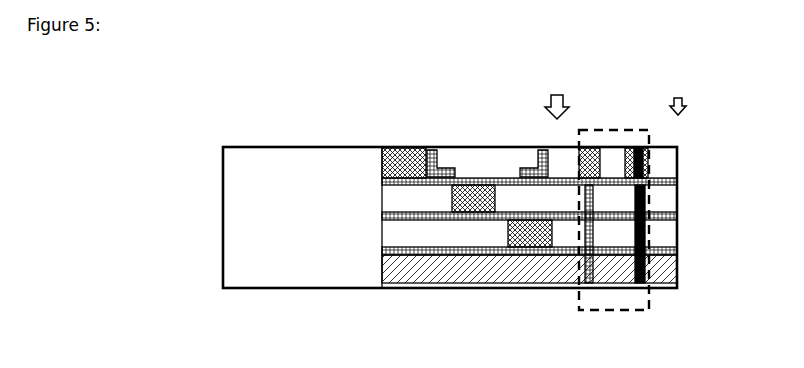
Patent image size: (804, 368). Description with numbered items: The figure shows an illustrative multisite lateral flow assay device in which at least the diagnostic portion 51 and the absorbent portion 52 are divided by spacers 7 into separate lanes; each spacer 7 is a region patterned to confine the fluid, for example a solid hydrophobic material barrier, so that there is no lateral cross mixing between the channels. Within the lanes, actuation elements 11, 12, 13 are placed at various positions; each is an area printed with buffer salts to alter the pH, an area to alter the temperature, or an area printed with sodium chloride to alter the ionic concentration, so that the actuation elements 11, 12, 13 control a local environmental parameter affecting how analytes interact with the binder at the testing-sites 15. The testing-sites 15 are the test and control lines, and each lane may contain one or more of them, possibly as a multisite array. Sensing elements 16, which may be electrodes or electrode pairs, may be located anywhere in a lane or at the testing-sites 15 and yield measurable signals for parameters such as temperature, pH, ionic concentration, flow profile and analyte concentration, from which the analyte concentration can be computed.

The spacer 7 is at (397, 222).
The actuation element 11 is at (403, 162).
The actuation element 12 is at (472, 197).
The actuation element 13 is at (530, 233).
The testing-sites 15 is at (614, 230).
The sensing elements 16 is at (623, 146).
The diagnostic portion 51 is at (554, 92).
The absorbent portion 52 is at (675, 90).